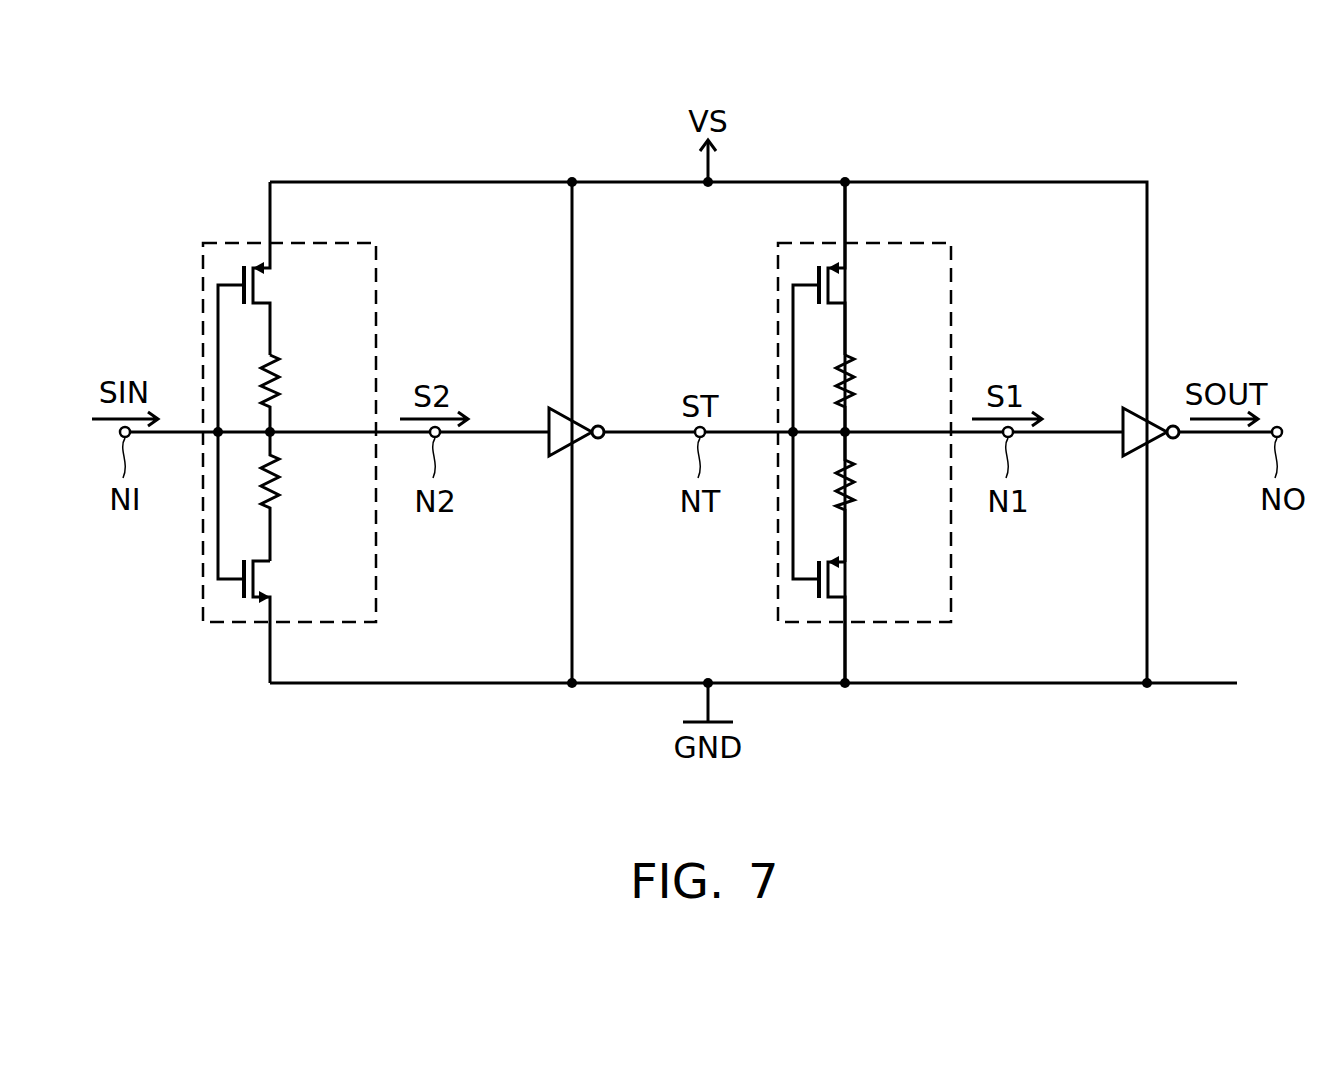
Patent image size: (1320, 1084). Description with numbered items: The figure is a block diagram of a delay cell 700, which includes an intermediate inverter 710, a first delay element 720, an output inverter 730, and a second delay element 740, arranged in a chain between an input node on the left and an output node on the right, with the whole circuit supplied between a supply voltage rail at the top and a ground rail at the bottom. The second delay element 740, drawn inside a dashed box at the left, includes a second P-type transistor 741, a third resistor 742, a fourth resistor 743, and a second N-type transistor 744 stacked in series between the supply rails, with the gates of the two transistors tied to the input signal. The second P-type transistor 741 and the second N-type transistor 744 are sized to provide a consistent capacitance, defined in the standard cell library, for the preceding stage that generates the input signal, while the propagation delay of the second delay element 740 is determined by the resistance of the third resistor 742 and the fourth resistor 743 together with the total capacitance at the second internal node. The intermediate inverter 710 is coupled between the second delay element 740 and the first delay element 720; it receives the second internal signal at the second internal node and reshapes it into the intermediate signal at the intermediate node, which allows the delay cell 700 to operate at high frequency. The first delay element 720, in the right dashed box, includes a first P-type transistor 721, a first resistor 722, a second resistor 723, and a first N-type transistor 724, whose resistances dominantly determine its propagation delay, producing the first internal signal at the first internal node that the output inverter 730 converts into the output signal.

The delay cell 700 is at (965, 792).
The intermediate inverter 710 is at (548, 453).
The first delay element 720 is at (886, 432).
The first P-type transistor 721 is at (841, 286).
The first resistor 722 is at (858, 378).
The second resistor 723 is at (858, 483).
The first N-type transistor 724 is at (841, 581).
The output inverter 730 is at (1123, 453).
The second delay element 740 is at (311, 432).
The second P-type transistor 741 is at (266, 286).
The third resistor 742 is at (283, 378).
The fourth resistor 743 is at (283, 483).
The second N-type transistor 744 is at (266, 581).